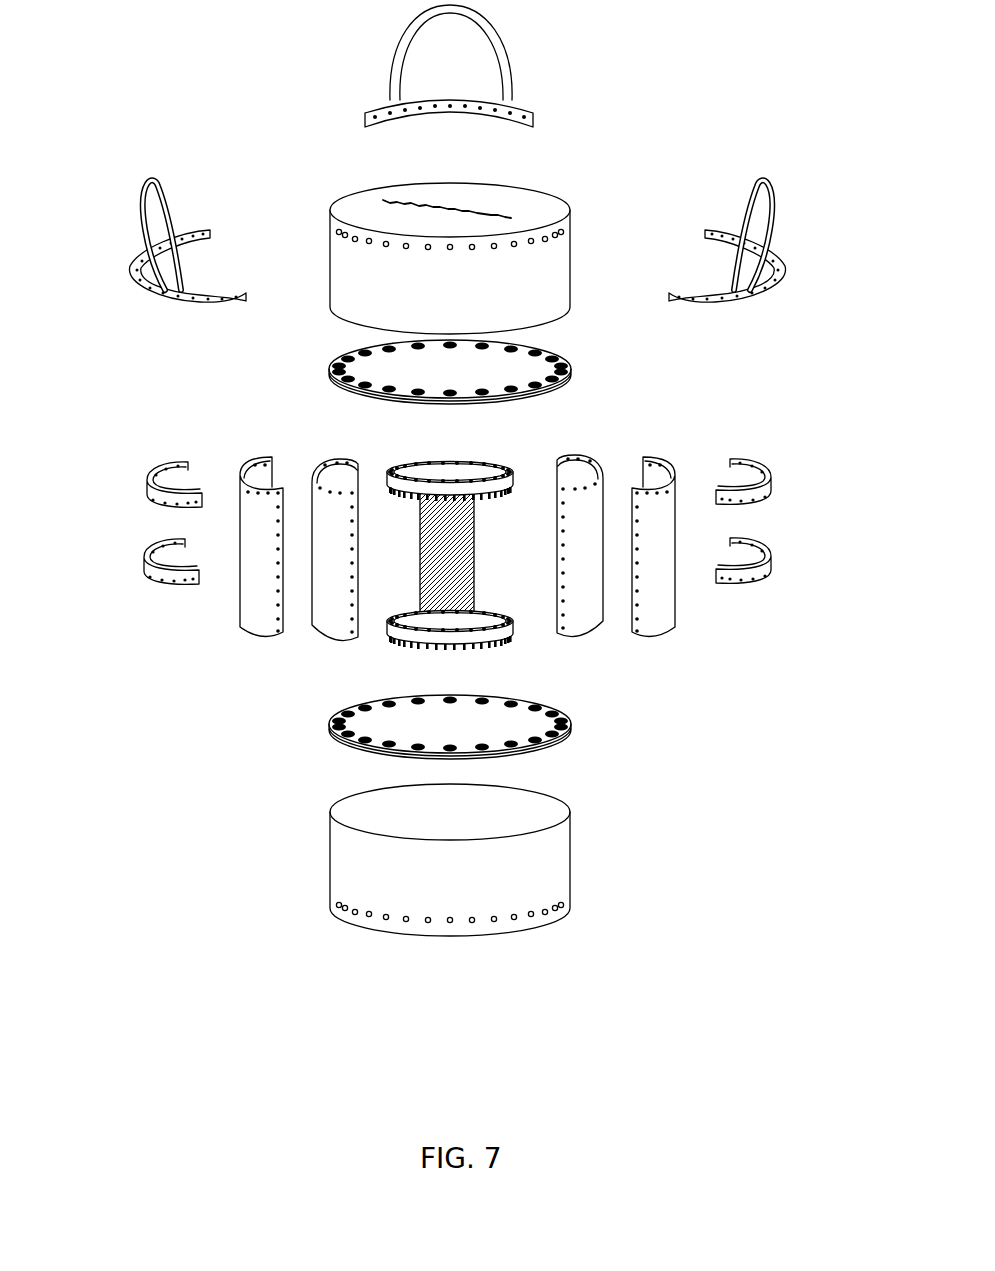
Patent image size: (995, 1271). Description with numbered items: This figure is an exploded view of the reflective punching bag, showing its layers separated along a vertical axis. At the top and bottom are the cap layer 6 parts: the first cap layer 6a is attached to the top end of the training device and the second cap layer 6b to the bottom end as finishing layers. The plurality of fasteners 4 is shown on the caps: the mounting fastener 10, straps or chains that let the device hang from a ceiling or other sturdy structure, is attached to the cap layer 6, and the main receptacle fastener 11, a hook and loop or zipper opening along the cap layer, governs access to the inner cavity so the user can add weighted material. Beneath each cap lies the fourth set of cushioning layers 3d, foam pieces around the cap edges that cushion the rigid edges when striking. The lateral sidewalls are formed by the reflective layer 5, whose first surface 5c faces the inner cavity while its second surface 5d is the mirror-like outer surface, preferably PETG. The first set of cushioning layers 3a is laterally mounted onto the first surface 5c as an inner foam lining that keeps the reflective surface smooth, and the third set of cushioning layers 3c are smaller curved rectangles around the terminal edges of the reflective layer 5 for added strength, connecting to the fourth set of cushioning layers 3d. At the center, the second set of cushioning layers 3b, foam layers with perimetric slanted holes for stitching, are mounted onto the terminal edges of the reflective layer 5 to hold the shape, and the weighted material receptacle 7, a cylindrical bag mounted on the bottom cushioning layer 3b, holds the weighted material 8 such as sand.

The plurality of fasteners 4 is at (392, 100).
The mounting fastener 10 is at (135, 254).
The main receptacle fastener 11 is at (487, 213).
The cap layer 6 is at (498, 531).
The first cap layer 6a is at (496, 230).
The second cap layer 6b is at (553, 870).
The first set of cushioning layers 3a is at (350, 640).
The second set of cushioning layers 3b is at (470, 468).
The third set of cushioning layers 3c is at (144, 466).
The fourth set of cushioning layers 3d is at (562, 358).
The reflective layer 5 is at (270, 632).
The first surface 5c is at (250, 462).
The second surface 5d is at (260, 598).
The weighted material receptacle 7 is at (422, 548).
The weighted material 8 is at (472, 565).